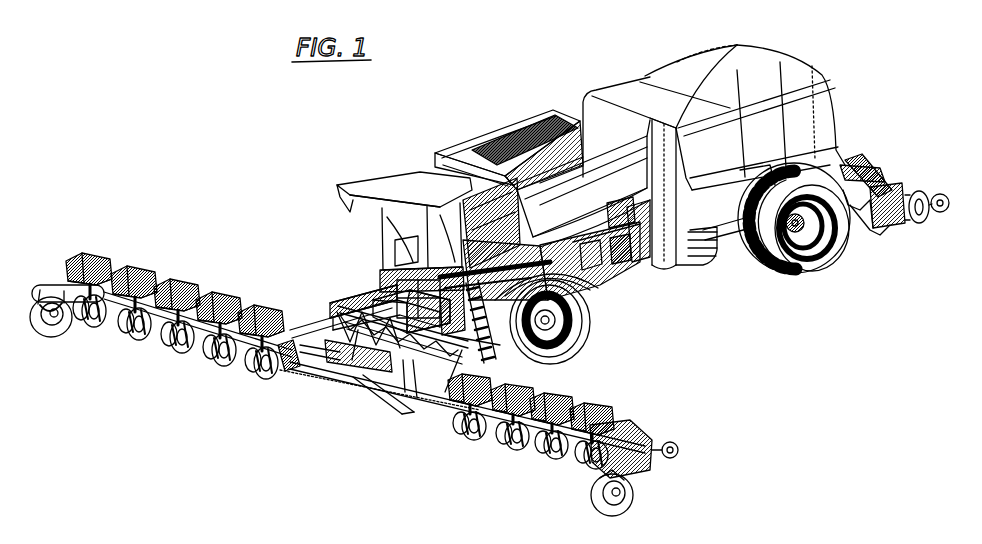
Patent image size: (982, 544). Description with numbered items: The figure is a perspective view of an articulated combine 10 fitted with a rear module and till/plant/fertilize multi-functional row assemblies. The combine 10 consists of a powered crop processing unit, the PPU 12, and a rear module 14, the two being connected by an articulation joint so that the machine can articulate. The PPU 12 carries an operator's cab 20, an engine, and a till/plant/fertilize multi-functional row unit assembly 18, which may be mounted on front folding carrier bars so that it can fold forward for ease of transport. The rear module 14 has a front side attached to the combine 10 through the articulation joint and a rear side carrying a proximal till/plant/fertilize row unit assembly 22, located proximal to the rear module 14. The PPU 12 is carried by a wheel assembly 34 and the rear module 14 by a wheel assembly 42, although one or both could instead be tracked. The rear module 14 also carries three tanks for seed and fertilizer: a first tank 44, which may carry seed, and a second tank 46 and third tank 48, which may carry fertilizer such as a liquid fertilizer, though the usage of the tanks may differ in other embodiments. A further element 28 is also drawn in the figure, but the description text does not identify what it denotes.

The articulated combine 10 is at (491, 128).
The PPU (crop processing unit) 12 is at (336, 156).
The rear module 14 is at (688, 50).
The till/plant/fertilize multi-functional row unit assembly 18 is at (189, 265).
The operator's cab 20 is at (418, 175).
The proximal till/plant/fertilize row unit assembly 22 is at (884, 156).
The toolbar frame linkage 28 is at (500, 374).
The wheel assembly 34 is at (588, 327).
The wheel assembly 42 is at (814, 268).
The first tank 44 is at (637, 97).
The second tank 46 is at (678, 72).
The third tank 48 is at (782, 63).